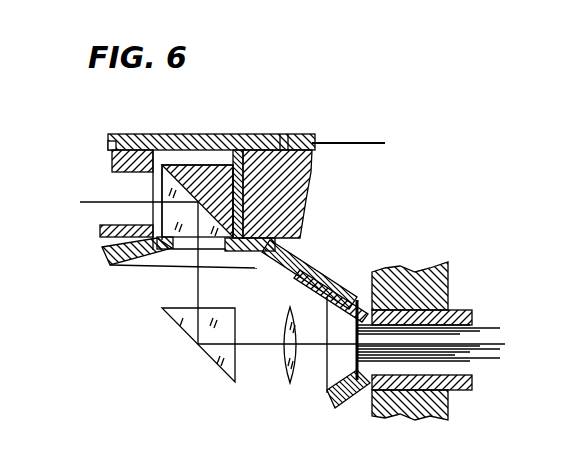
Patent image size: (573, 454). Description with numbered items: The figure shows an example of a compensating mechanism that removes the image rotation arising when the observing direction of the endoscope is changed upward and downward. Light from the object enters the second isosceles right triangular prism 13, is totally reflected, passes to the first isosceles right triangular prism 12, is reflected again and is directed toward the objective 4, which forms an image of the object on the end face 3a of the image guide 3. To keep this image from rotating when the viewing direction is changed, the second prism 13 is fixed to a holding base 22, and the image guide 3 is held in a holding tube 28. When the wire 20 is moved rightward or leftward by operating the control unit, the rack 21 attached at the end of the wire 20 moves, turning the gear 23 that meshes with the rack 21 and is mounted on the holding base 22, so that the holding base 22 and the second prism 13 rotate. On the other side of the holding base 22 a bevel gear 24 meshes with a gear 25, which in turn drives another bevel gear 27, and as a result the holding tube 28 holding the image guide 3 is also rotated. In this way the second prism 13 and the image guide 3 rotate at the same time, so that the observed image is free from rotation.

The image guide 3 is at (450, 342).
The end face of the image guide 3a is at (353, 362).
The objective 4 is at (282, 367).
The first isosceles right triangular prism 12 is at (180, 330).
The second isosceles right triangular prism 13 is at (162, 190).
The wire 20 is at (355, 143).
The rack 21 is at (300, 137).
The holding base 22 is at (218, 178).
The gear 23 is at (170, 136).
The bevel gear 24 is at (140, 266).
The gear 25 is at (308, 262).
The bevel gear 27 is at (358, 297).
The holding tube 28 is at (462, 305).